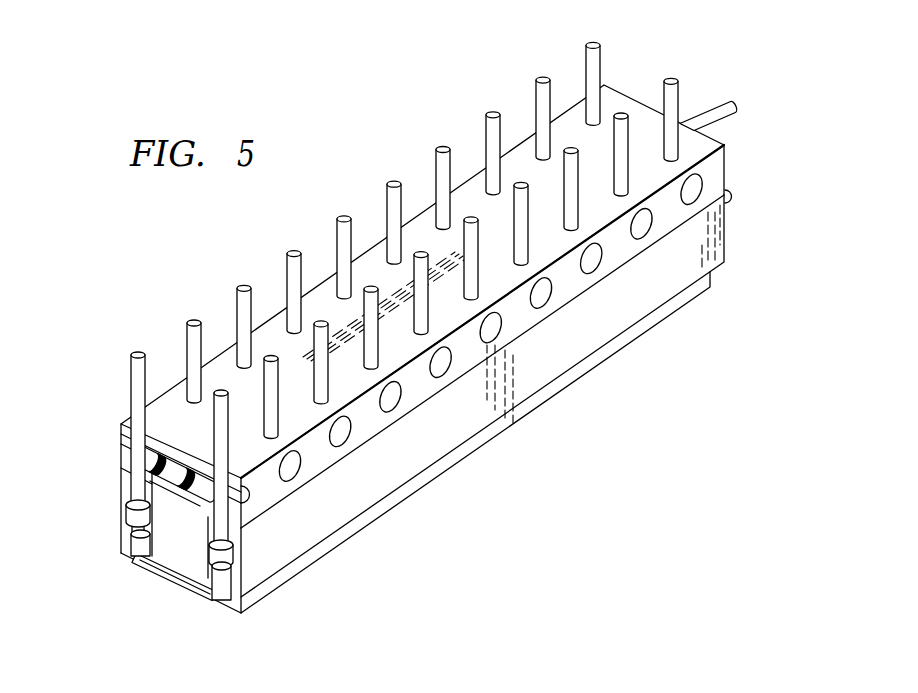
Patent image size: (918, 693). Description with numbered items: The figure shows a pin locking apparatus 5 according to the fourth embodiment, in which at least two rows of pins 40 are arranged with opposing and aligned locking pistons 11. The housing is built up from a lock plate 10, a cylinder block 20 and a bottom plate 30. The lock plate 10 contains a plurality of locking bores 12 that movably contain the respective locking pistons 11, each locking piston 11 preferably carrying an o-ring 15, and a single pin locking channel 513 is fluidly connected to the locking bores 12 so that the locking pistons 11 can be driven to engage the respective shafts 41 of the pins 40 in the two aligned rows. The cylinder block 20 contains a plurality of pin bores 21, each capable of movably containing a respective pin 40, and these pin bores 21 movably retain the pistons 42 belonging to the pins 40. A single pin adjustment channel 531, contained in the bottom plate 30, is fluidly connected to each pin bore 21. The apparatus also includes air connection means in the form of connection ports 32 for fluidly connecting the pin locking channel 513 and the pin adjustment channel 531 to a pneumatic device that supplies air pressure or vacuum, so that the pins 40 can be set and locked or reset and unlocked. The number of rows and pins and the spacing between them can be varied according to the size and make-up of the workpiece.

The pin locking apparatus 5 is at (244, 218).
The lock plate 10 is at (374, 418).
The locking piston 11 is at (182, 450).
The locking bore 12 is at (128, 445).
The o-ring 15 is at (158, 450).
The cylinder block 20 is at (372, 490).
The pin bore 21 is at (142, 532).
The bottom plate 30 is at (334, 544).
The connection port 32 is at (720, 119).
The pin 40 is at (118, 401).
The shaft 41 is at (143, 377).
The piston 42 is at (128, 508).
The pin locking channel 513 is at (173, 482).
The pin adjustment channel 531 is at (180, 576).